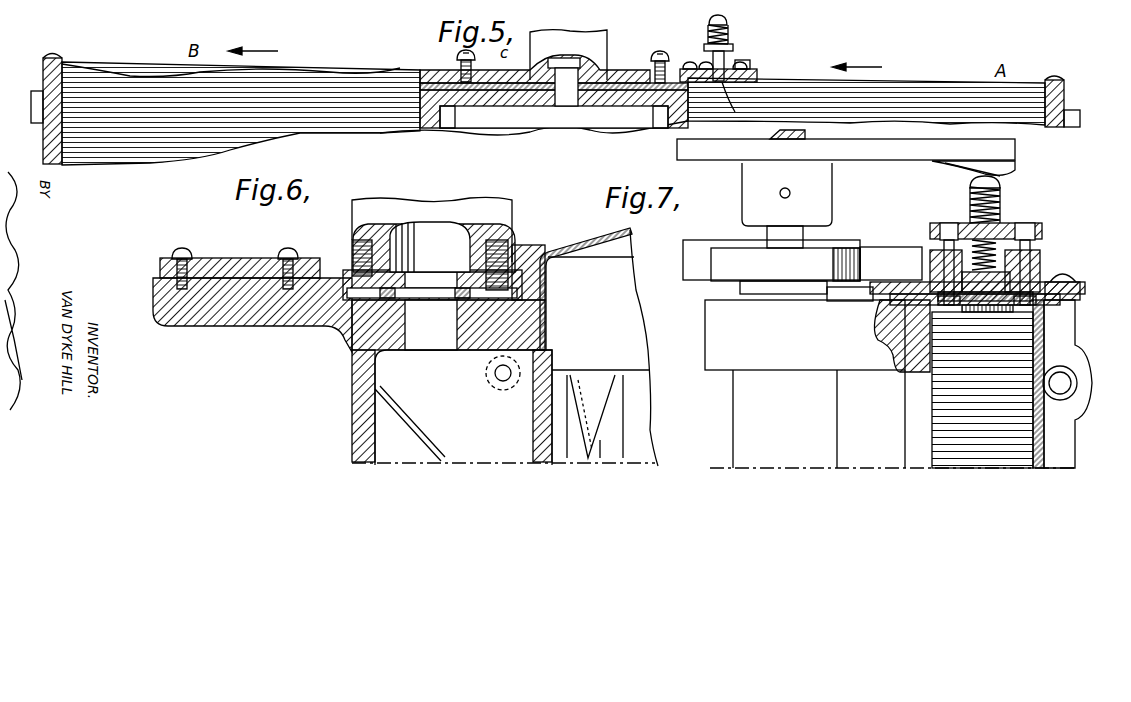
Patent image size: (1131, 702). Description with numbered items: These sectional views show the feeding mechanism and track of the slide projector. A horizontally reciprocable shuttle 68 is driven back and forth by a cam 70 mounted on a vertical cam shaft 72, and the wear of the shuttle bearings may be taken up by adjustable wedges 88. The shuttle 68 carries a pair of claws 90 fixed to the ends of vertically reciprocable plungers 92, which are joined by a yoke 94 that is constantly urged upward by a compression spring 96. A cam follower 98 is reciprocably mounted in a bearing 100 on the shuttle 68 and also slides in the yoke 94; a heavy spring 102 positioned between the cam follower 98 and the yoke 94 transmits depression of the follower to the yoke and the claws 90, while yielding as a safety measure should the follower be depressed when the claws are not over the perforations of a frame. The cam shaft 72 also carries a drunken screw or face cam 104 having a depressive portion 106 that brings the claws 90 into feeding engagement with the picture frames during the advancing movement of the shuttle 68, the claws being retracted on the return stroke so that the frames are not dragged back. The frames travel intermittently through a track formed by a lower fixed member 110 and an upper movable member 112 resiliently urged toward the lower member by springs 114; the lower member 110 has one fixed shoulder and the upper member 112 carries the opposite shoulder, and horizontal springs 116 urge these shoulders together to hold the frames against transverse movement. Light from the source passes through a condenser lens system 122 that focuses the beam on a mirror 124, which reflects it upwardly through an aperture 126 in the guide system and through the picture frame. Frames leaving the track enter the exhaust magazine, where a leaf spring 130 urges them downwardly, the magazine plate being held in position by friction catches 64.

In FIG. 7, the friction catches 64 is at (1078, 385).
In FIG. 5, the shuttle 68 is at (780, 0).
In FIG. 7, the shuttle 68 is at (878, 256).
In FIG. 5, the cam 70 is at (686, 0).
In FIG. 7, the cam 70 is at (733, 263).
In FIG. 5, the cam shaft 72 is at (654, 0).
In FIG. 7, the cam shaft 72 is at (762, 236).
In FIG. 6, the adjustable wedges 88 is at (288, 262).
In FIG. 5, the claws 90 is at (728, 95).
In FIG. 7, the claws 90 is at (885, 335).
In FIG. 5, the plungers 92 is at (750, 63).
In FIG. 7, the plungers 92 is at (946, 266).
In FIG. 7, the yoke 94 is at (1003, 232).
In FIG. 7, the compression spring 96 is at (963, 252).
In FIG. 5, the cam follower 98 is at (728, 20).
In FIG. 7, the cam follower 98 is at (967, 184).
In FIG. 7, the bearing 100 is at (1024, 276).
In FIG. 5, the heavy spring 102 is at (730, 33).
In FIG. 7, the heavy spring 102 is at (968, 207).
In FIG. 7, the face cam 104 is at (890, 153).
In FIG. 7, the depressive portion 106 is at (1020, 170).
In FIG. 5, the lower fixed member 110 is at (497, 97).
In FIG. 6, the lower fixed member 110 is at (357, 330).
In FIG. 5, the upper movable member 112 is at (527, 95).
In FIG. 6, the upper movable member 112 is at (492, 244).
In FIG. 5, the springs 114 is at (461, 59).
In FIG. 6, the springs 114 is at (354, 266).
In FIG. 6, the horizontal springs 116 is at (522, 272).
In FIG. 6, the condenser lens system 122 is at (575, 408).
In FIG. 6, the mirror 124 is at (425, 443).
In FIG. 6, the aperture 126 is at (428, 333).
In FIG. 5, the leaf spring 130 is at (120, 74).